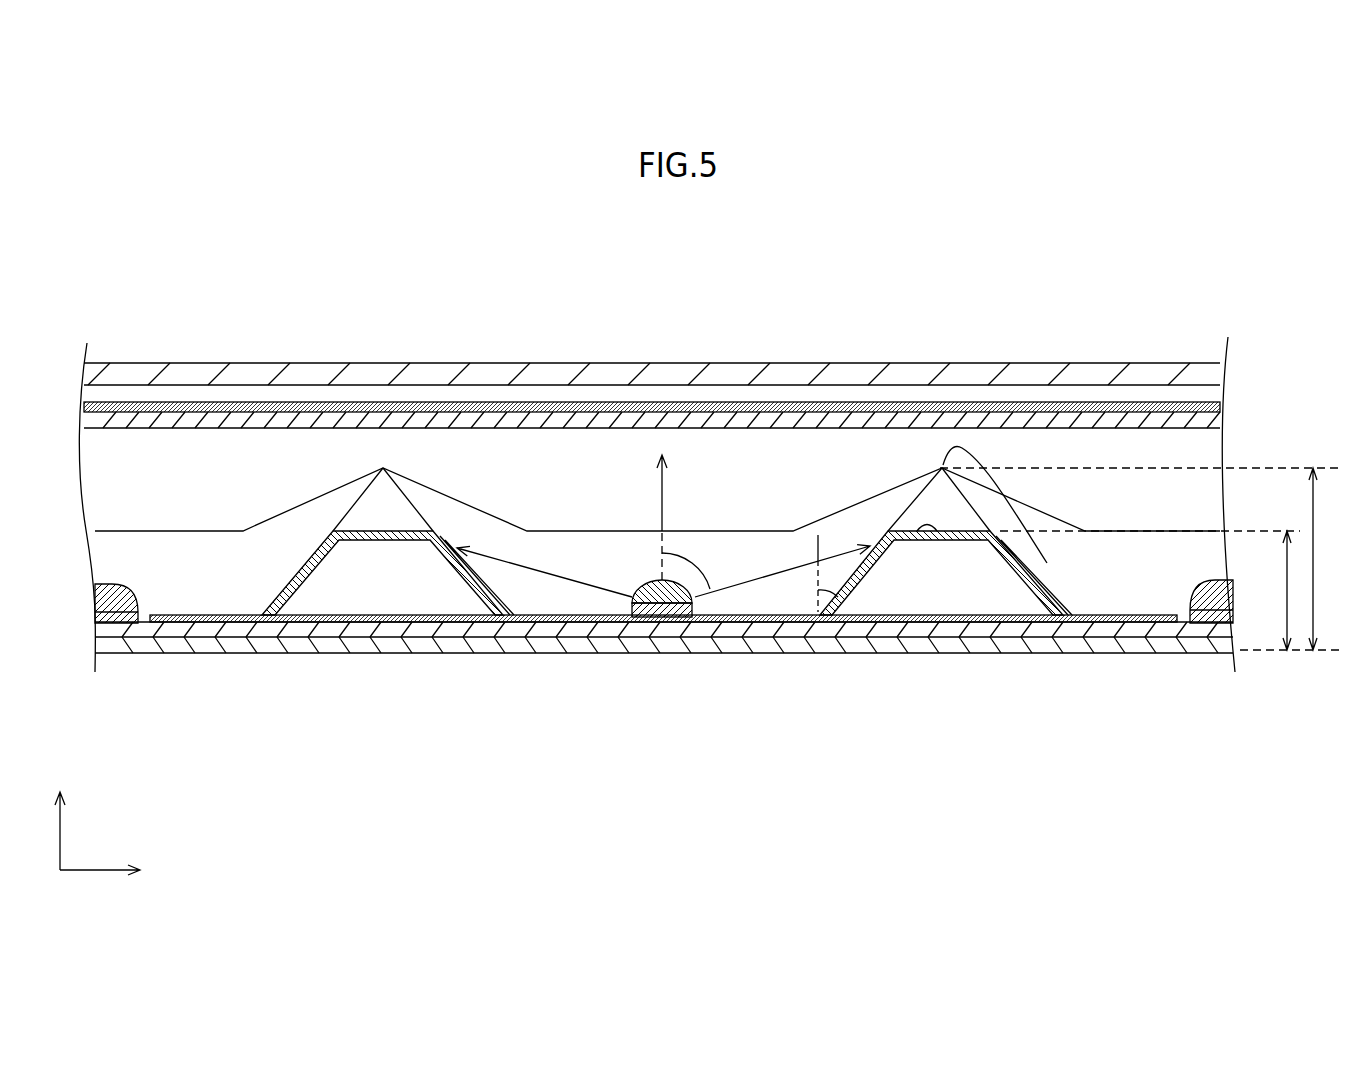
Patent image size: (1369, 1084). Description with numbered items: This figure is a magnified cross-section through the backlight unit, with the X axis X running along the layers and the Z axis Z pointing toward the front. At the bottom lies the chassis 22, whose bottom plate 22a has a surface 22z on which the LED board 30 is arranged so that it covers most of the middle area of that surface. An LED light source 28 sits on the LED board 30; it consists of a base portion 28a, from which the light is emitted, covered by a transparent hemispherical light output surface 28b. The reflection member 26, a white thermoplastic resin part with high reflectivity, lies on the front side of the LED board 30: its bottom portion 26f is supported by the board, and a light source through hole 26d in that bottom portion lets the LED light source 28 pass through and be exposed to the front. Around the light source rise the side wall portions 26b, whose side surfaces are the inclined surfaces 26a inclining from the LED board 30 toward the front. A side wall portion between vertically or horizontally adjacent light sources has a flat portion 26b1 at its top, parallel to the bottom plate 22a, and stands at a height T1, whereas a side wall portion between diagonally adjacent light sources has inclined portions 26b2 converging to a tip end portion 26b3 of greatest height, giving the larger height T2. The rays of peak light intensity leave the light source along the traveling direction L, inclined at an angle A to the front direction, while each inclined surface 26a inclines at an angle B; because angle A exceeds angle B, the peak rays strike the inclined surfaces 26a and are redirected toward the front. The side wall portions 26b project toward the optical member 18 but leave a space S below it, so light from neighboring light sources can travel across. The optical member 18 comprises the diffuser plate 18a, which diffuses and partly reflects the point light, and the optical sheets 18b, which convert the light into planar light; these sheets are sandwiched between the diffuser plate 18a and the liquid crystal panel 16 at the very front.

The liquid crystal panel 16 is at (862, 367).
The optical member 18 is at (652, 328).
The diffuser plate 18a is at (480, 418).
The optical sheets 18b is at (532, 405).
The space S is at (768, 447).
The chassis 22 is at (664, 668).
The bottom plate 22a is at (262, 650).
The surface 22z is at (194, 636).
The LED board 30 is at (441, 645).
The reflection member 26 is at (693, 621).
The inclined surfaces 26a is at (860, 572).
The side wall portions 26b is at (1022, 621).
The flat portion 26b1 is at (957, 520).
The inclined portions 26b2 is at (1005, 565).
The tip end portion 26b3 is at (1047, 563).
The light source through holes 26d is at (618, 624).
The bottom portion 26f is at (545, 622).
The LED light source 28 is at (687, 676).
The base portion 28a is at (678, 612).
The light output surface 28b is at (653, 592).
The traveling direction L is at (513, 563).
The angle A is at (686, 564).
The angle B is at (830, 573).
The height T1 is at (1271, 590).
The height T2 is at (1142, 559).
The Z-axis direction Z is at (60, 816).
The X-axis direction X is at (112, 869).